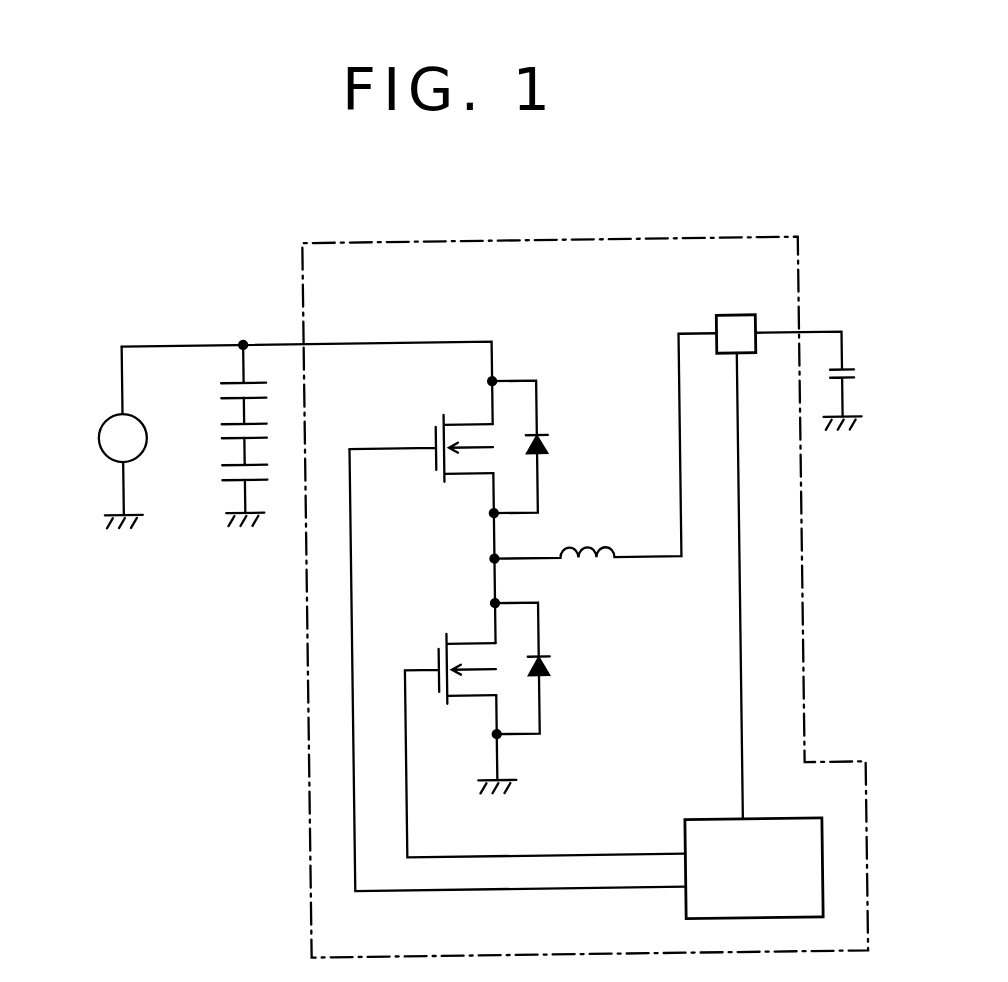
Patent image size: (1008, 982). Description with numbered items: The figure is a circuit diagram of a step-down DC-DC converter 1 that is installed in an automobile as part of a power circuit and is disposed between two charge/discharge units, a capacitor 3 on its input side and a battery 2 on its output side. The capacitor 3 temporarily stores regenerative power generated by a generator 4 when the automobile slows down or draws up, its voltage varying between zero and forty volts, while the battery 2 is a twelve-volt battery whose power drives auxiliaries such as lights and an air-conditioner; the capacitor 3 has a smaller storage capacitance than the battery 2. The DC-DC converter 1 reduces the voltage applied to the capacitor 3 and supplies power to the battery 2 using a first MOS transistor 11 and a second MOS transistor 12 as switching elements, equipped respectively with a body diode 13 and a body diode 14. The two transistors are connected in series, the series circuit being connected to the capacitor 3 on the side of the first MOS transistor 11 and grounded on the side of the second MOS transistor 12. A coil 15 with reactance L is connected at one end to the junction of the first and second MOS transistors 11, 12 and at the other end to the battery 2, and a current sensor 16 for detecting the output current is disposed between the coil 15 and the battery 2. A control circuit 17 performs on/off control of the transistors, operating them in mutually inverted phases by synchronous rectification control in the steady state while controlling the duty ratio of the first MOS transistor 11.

The DC-DC converter 1 is at (692, 239).
The charge/discharge unit 2 is at (855, 373).
The charge/discharge unit 3 is at (236, 478).
The generator 4 is at (102, 441).
The first MOS transistor 11 is at (431, 460).
The second MOS transistor 12 is at (436, 655).
The body diode 13 is at (550, 445).
The body diode 14 is at (550, 660).
The coil 15 is at (599, 538).
The current sensor 16 is at (740, 317).
The control circuit 17 is at (682, 900).